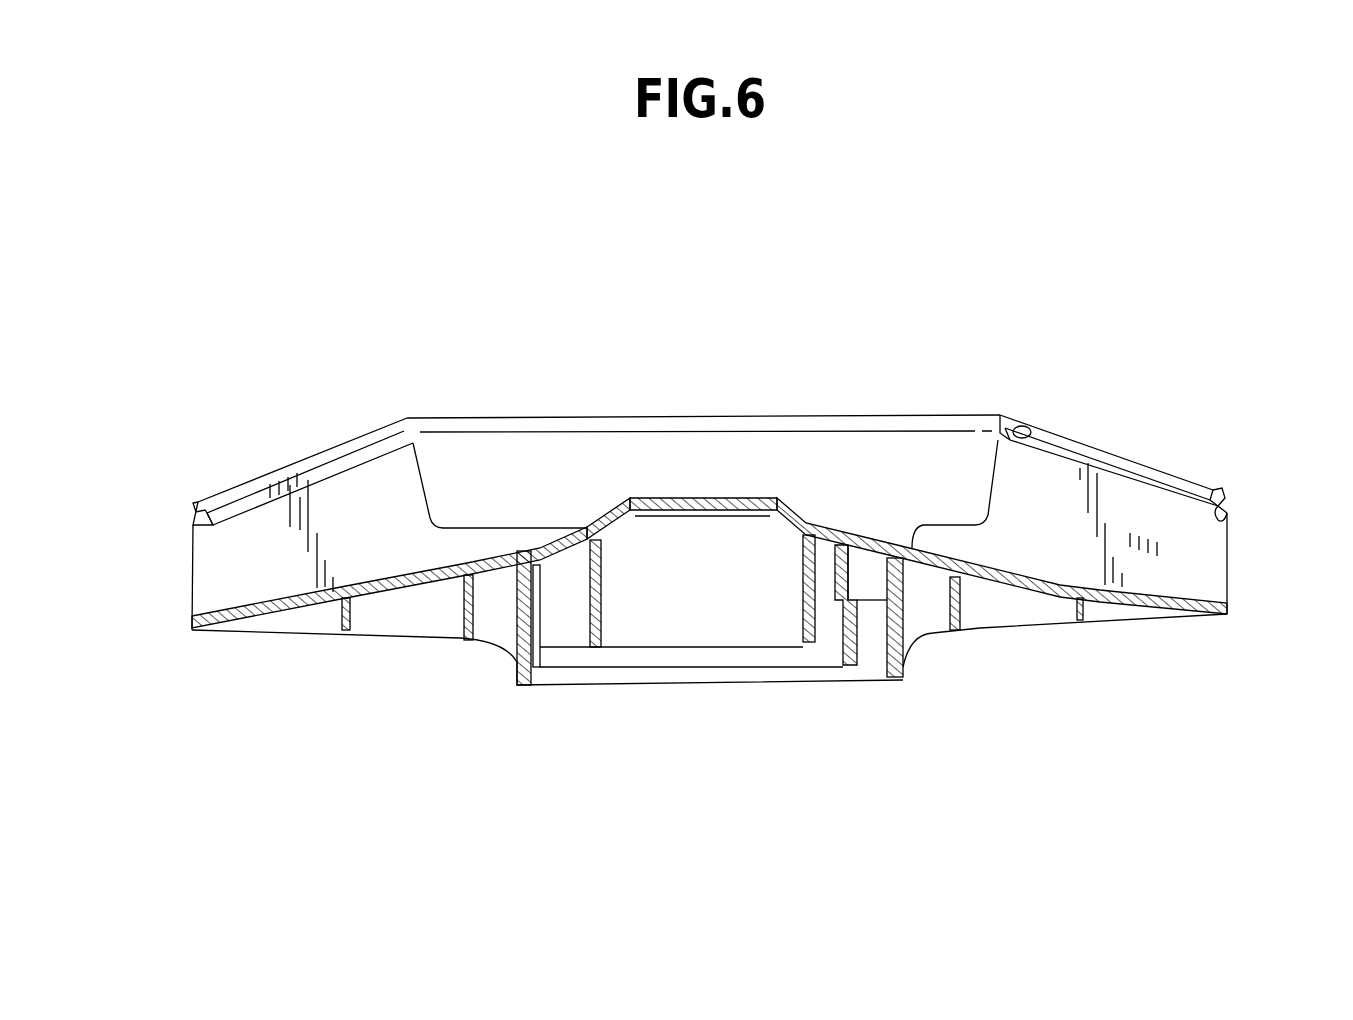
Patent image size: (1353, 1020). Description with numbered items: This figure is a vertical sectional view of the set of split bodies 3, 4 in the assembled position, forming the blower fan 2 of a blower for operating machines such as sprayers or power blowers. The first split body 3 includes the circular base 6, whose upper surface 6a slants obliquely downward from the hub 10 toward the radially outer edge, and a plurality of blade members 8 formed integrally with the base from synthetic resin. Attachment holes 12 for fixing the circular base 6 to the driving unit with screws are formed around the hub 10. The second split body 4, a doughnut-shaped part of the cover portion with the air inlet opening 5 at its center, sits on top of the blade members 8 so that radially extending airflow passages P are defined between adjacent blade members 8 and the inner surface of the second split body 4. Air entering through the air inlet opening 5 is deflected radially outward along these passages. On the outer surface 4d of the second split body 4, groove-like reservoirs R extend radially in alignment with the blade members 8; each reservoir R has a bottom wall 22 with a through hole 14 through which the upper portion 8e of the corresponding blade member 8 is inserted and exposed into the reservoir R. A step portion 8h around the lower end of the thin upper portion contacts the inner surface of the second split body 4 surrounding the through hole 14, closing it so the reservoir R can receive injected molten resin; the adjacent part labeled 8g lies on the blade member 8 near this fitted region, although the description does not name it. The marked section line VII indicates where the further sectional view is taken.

The blower fan 2 is at (538, 350).
The first split body 3 is at (606, 500).
The second split body 4 is at (851, 410).
The outer surface 4d is at (193, 503).
The air inlet opening 5 is at (750, 470).
The circular base 6 is at (1005, 585).
The upper surface 6a is at (500, 560).
The blade member 8 is at (385, 510).
The upper portion 8e is at (227, 490).
The flange rib 8g is at (340, 460).
The step portion 8h is at (260, 498).
The hub 10 is at (690, 497).
The attachment hole 12 is at (872, 645).
The through hole 14 is at (1040, 430).
The bottom wall 22 is at (1225, 532).
The reservoir R is at (368, 430).
The airflow passage P is at (210, 573).
The section line VII is at (232, 398).